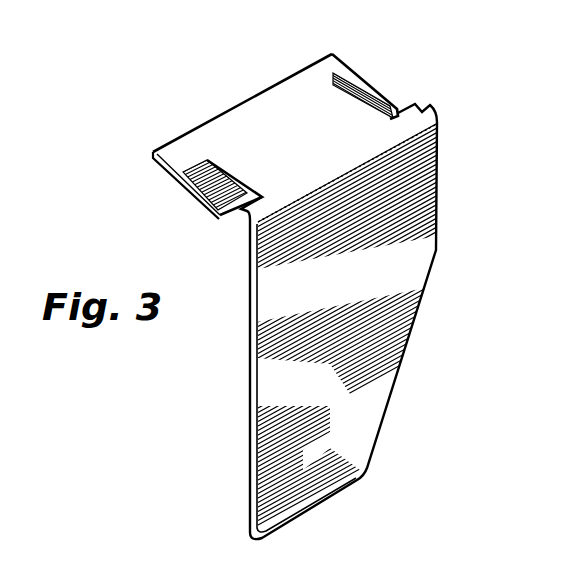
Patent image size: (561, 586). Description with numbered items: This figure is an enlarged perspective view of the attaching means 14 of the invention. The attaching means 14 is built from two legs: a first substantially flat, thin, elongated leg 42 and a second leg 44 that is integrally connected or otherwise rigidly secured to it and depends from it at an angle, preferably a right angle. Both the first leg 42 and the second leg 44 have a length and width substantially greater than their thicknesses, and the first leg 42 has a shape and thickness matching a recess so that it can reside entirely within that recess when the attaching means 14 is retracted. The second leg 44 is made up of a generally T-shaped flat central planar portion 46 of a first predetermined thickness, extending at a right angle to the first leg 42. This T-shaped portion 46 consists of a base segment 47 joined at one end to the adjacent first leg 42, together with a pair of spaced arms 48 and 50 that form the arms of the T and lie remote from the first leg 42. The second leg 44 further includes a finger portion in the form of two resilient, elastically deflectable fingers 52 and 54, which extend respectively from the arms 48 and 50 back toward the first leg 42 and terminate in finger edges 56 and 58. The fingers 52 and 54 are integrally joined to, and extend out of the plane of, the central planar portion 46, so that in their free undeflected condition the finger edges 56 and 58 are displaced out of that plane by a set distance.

The attaching means 14 is at (292, 291).
The first leg 42 is at (338, 429).
The second leg 44 is at (240, 105).
The central planar portion 46 is at (308, 143).
The base segment 47 is at (217, 127).
The arm 48 is at (172, 155).
The arm 50 is at (337, 70).
The finger 52 is at (200, 193).
The finger 54 is at (383, 92).
The finger edge 56 is at (226, 217).
The finger edge 58 is at (425, 108).